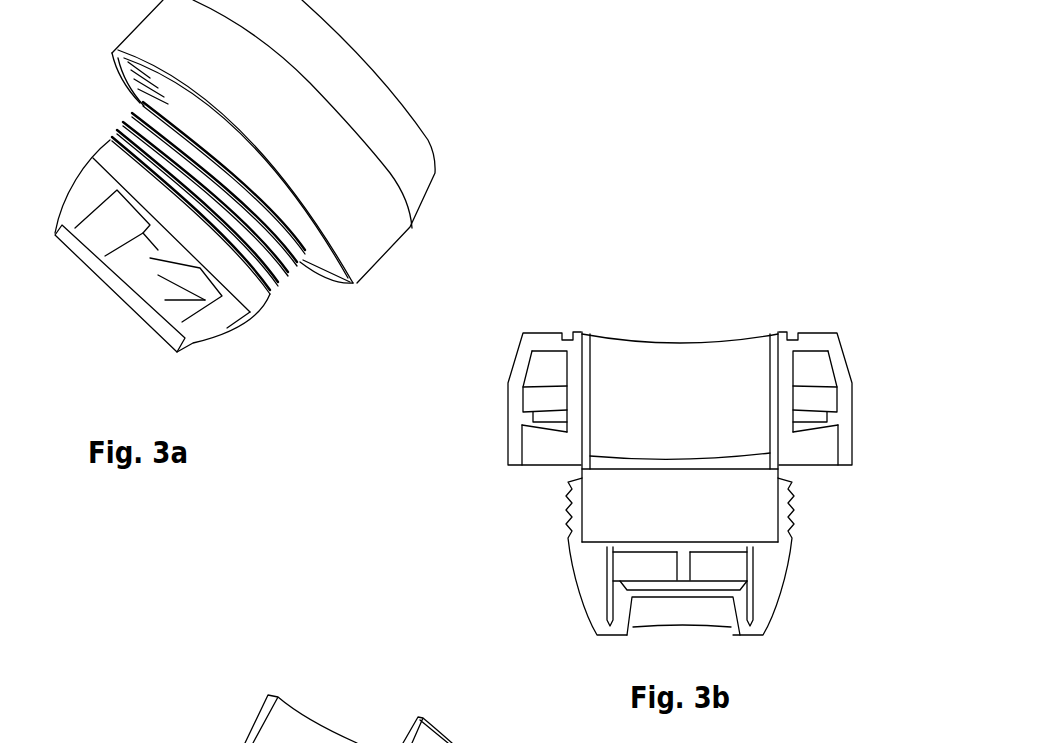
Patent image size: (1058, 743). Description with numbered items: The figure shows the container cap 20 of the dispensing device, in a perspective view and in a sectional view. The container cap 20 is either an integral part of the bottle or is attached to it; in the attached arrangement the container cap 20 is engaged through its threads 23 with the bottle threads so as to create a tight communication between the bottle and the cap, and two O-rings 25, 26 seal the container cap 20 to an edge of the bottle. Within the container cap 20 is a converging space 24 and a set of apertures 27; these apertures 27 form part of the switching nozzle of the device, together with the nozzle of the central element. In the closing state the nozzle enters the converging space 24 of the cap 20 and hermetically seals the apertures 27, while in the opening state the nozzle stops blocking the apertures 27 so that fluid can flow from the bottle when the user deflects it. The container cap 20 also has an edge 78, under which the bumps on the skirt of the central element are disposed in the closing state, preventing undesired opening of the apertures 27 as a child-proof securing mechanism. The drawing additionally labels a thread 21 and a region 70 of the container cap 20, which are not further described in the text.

In FIG. 3a, the container cap 20 is at (433, 143).
In FIG. 3b, the container cap 20 is at (709, 340).
In FIG. 3a, the external thread 21 is at (287, 277).
In FIG. 3b, the threads 23 is at (543, 427).
In FIG. 3b, the converging space 24 is at (607, 597).
In FIG. 3b, the O-ring 25 is at (802, 357).
In FIG. 3b, the O-ring 26 is at (820, 347).
In FIG. 3a, the apertures 27 is at (177, 303).
In FIG. 3b, the apertures 27 is at (718, 563).
In FIG. 3b, the body rim 70 is at (765, 540).
In FIG. 3a, the edge 78 is at (352, 287).